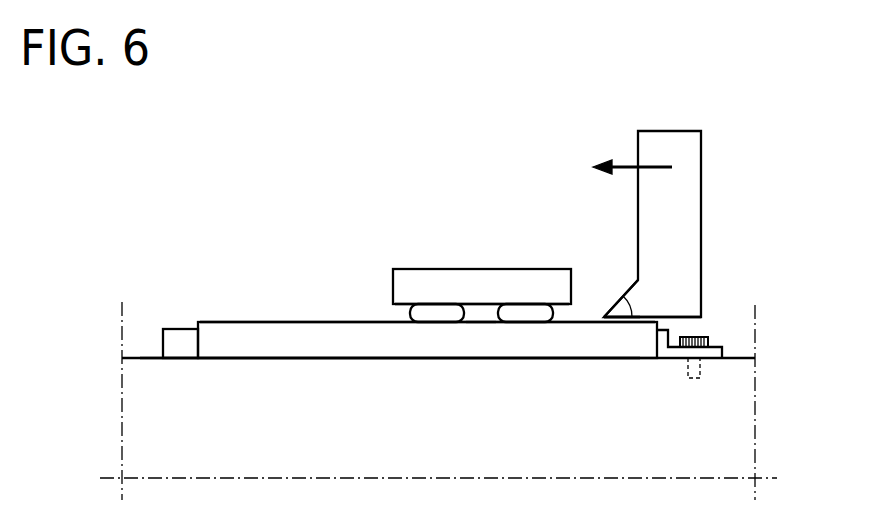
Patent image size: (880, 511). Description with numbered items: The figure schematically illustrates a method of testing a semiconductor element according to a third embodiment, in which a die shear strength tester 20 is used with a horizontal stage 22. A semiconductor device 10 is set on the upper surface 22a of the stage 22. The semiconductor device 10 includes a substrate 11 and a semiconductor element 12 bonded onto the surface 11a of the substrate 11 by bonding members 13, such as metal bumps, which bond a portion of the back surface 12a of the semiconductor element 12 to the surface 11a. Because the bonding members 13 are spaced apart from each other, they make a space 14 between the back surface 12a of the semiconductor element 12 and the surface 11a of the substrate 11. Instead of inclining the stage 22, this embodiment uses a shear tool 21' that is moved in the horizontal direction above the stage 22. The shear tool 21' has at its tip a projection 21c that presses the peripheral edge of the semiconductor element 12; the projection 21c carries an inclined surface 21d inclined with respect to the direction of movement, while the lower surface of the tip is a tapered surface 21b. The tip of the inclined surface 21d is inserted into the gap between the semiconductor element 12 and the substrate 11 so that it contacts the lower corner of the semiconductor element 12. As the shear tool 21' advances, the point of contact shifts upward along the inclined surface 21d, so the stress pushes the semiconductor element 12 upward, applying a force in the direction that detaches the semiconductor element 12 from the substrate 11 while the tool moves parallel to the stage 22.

The semiconductor device 10 is at (487, 270).
The substrate 11 is at (223, 338).
The surface of the substrate 11a is at (276, 322).
The semiconductor element 12 is at (452, 285).
The back surface of the semiconductor element 12a is at (478, 304).
The bonding members 13 is at (442, 313).
The space 14 is at (497, 317).
The die shear strength tester 20 is at (682, 251).
The shear tool 21' is at (711, 211).
The tapered surface 21b is at (626, 318).
The projection 21c is at (633, 309).
The inclined surface 21d is at (625, 300).
The stage 22 is at (723, 415).
The upper surface of the stage 22a is at (334, 358).